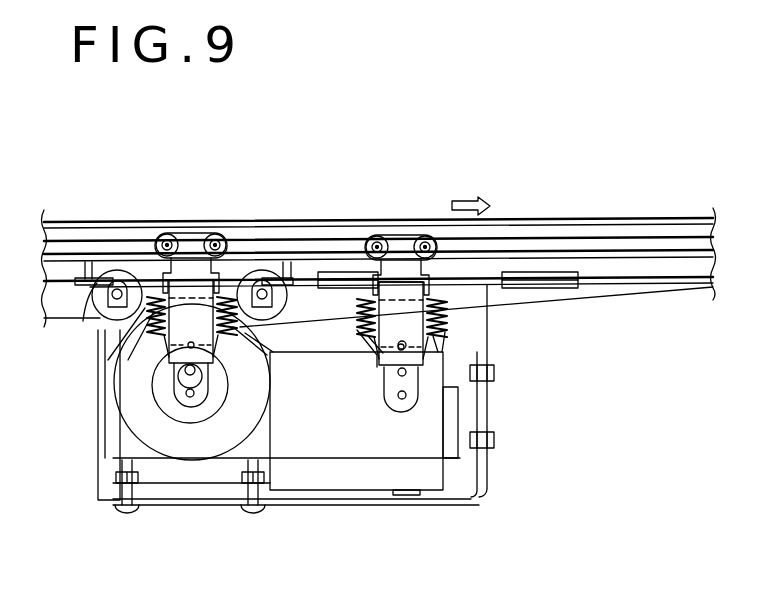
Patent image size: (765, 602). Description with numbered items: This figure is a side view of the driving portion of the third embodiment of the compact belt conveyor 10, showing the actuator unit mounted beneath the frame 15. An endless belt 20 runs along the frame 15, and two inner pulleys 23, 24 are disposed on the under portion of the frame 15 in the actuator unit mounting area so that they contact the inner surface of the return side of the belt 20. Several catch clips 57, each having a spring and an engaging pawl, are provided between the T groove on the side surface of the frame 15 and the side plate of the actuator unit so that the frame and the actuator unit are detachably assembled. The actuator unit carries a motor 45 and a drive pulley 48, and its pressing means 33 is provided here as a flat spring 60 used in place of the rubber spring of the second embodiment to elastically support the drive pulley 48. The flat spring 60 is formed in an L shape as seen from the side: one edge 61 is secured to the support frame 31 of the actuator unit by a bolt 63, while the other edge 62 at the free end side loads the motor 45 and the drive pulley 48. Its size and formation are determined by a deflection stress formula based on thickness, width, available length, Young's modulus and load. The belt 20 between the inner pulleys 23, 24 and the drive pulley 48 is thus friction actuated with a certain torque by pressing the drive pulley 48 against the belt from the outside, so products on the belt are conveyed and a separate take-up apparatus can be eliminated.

The conveyor apparatus 10 is at (636, 196).
The frame 15 is at (684, 232).
The endless belt 20 is at (553, 217).
The inner pulley 23 is at (289, 297).
The inner pulley 24 is at (83, 322).
The support frame 31 is at (488, 329).
The pressing means 33 is at (503, 430).
The motor 45 is at (315, 447).
The drive pulley 48 is at (133, 412).
The catch clip 57 is at (167, 283).
The flat spring 60 is at (369, 422).
The one edge of the flat spring 61 is at (490, 470).
The other edge of the flat spring 62 is at (339, 524).
The bolt 63 is at (497, 377).